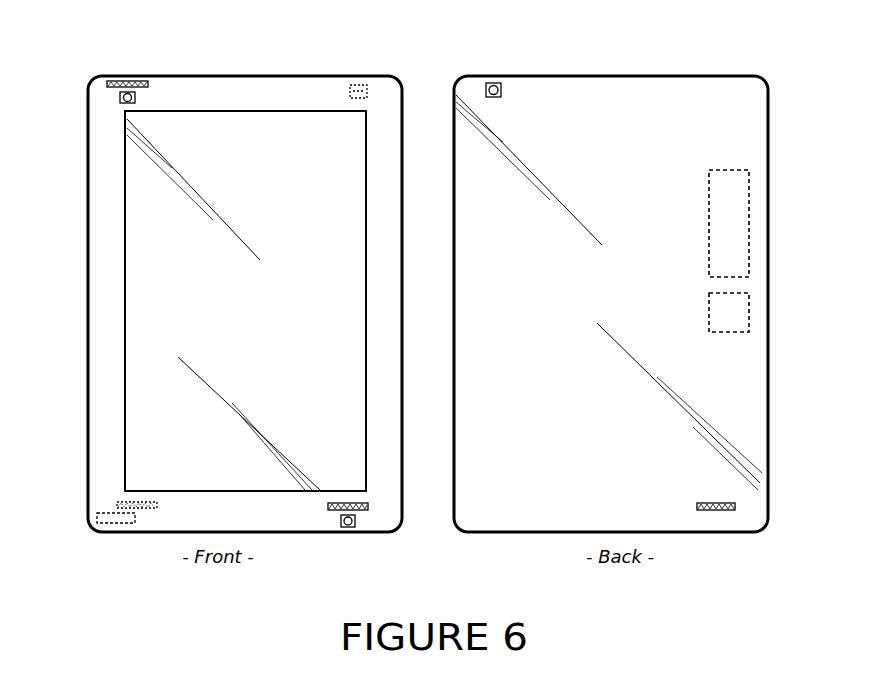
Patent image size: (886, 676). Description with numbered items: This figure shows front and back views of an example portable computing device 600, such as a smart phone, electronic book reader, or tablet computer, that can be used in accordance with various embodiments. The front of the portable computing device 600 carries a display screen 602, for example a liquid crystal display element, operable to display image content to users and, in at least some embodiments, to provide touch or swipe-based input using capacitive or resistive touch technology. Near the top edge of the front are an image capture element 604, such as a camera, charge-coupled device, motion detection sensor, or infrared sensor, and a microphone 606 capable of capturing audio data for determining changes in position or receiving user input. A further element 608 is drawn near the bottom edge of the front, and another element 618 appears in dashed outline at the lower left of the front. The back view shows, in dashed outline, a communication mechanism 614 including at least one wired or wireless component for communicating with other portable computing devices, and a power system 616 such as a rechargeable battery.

The portable computing device 600 is at (792, 80).
The display screen 602 is at (125, 220).
The image capture element 604 is at (120, 97).
The microphone 606 is at (136, 81).
The speaker 608 is at (362, 510).
The communication mechanism 614 is at (748, 242).
The power system 616 is at (748, 312).
The connector port 618 is at (113, 523).